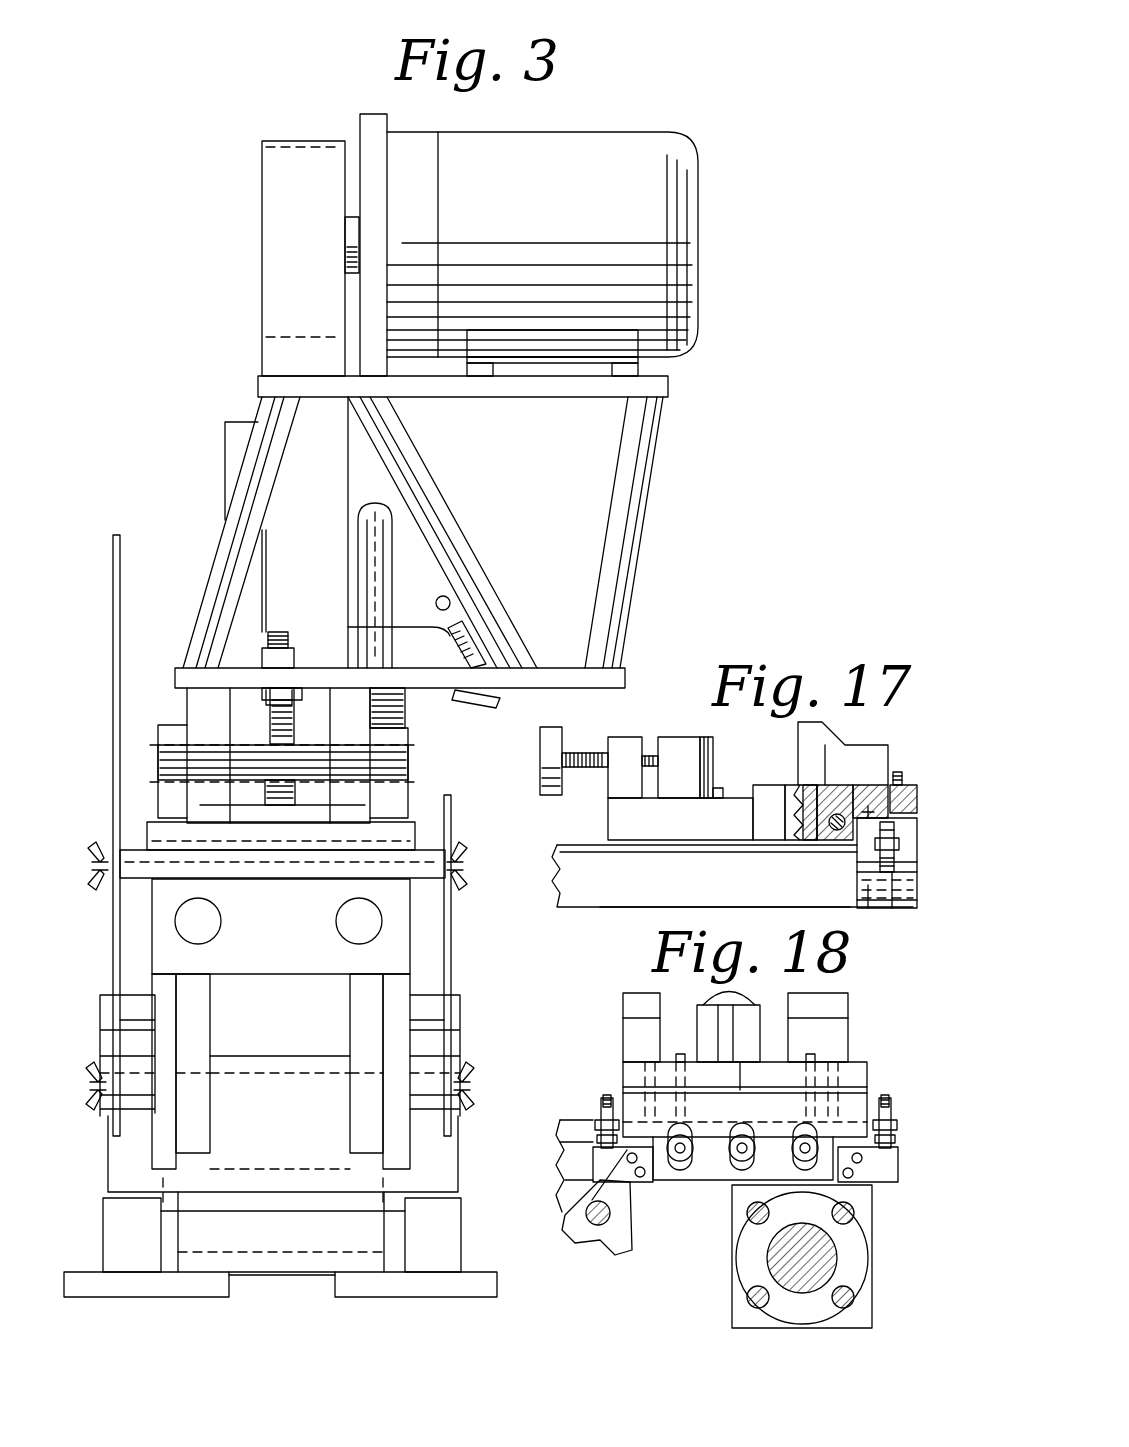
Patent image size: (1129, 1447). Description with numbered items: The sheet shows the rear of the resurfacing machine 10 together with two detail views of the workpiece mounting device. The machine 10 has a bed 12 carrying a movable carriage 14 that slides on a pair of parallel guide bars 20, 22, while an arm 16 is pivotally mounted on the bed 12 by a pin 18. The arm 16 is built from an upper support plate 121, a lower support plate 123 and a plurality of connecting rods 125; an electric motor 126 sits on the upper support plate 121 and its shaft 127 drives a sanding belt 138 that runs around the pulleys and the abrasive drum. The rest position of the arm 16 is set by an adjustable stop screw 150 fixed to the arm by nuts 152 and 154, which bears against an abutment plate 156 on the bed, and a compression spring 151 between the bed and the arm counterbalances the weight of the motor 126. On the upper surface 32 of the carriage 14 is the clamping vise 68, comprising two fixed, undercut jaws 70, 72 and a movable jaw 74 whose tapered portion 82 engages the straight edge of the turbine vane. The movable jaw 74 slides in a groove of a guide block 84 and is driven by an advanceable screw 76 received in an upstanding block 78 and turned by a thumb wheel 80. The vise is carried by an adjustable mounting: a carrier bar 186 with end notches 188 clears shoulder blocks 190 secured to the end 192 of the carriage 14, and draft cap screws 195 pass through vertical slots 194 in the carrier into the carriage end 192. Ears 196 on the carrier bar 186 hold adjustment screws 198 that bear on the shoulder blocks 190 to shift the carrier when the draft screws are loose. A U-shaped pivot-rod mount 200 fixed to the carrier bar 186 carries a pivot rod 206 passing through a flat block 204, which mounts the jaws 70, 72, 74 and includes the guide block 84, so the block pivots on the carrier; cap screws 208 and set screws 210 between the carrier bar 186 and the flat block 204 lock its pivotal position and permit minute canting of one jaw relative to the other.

In FIG. 3, the resurfacing machine 10 is at (672, 108).
In FIG. 3, the bed 12 is at (105, 1226).
In FIG. 17, the carriage 14 is at (597, 900).
In FIG. 18, the carriage 14 is at (560, 1144).
In FIG. 3, the arm 16 is at (664, 488).
In FIG. 3, the pin 18 is at (250, 755).
In FIG. 3, the guide bar 20 is at (213, 927).
In FIG. 18, the guide bar 20 is at (770, 1260).
In FIG. 3, the guide bar 22 is at (342, 914).
In FIG. 17, the upper surface 32 is at (571, 845).
In FIG. 18, the upper surface 32 is at (565, 1122).
In FIG. 17, the vise 68 is at (678, 722).
In FIG. 18, the vise 68 is at (592, 1009).
In FIG. 17, the fixed jaw 70 is at (800, 729).
In FIG. 18, the fixed jaw 70 is at (836, 1000).
In FIG. 18, the fixed jaw 72 is at (634, 995).
In FIG. 17, the movable jaw 74 is at (668, 740).
In FIG. 18, the movable jaw 74 is at (750, 1010).
In FIG. 17, the advanceable screw 76 is at (581, 772).
In FIG. 17, the upstanding block 78 is at (618, 737).
In FIG. 17, the thumb wheel 80 is at (540, 788).
In FIG. 18, the thumb wheel 80 is at (718, 998).
In FIG. 17, the tapered portion 82 is at (712, 740).
In FIG. 17, the guide block 84 is at (722, 810).
In FIG. 3, the upper support plate 121 is at (566, 398).
In FIG. 3, the lower support plate 123 is at (530, 690).
In FIG. 3, the connecting rods 125 is at (262, 550).
In FIG. 3, the electric motor 126 is at (565, 206).
In FIG. 3, the shaft 127 is at (360, 235).
In FIG. 3, the sanding belt 138 is at (328, 548).
In FIG. 3, the screw 150 is at (292, 726).
In FIG. 3, the compression spring 151 is at (402, 708).
In FIG. 3, the nut 152 is at (290, 642).
In FIG. 3, the nut 154 is at (290, 690).
In FIG. 3, the abutment plate 156 is at (272, 830).
In FIG. 17, the carrier bar 186 is at (896, 895).
In FIG. 18, the carrier bar 186 is at (630, 1080).
In FIG. 18, the end notches 188 is at (578, 1216).
In FIG. 17, the shoulder blocks 190 is at (870, 907).
In FIG. 18, the shoulder blocks 190 is at (630, 1180).
In FIG. 17, the end 192 is at (850, 907).
In FIG. 18, the end 192 is at (570, 1172).
In FIG. 18, the vertical slots 194 is at (686, 1130).
In FIG. 18, the draft cap screws 195 is at (715, 1142).
In FIG. 17, the ears 196 is at (878, 845).
In FIG. 18, the ears 196 is at (595, 1123).
In FIG. 17, the adjustment screws 198 is at (865, 882).
In FIG. 18, the adjustment screws 198 is at (605, 1099).
In FIG. 17, the pivot-rod mount 200 is at (826, 800).
In FIG. 17, the flat block 204 is at (772, 790).
In FIG. 18, the flat block 204 is at (745, 1065).
In FIG. 17, the pivot rod 206 is at (842, 795).
In FIG. 18, the cap screws 208 is at (648, 1060).
In FIG. 17, the set screws 210 is at (897, 770).
In FIG. 18, the set screws 210 is at (680, 1054).